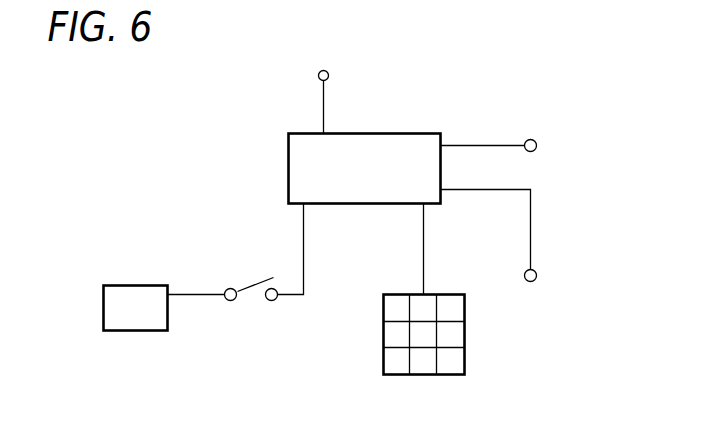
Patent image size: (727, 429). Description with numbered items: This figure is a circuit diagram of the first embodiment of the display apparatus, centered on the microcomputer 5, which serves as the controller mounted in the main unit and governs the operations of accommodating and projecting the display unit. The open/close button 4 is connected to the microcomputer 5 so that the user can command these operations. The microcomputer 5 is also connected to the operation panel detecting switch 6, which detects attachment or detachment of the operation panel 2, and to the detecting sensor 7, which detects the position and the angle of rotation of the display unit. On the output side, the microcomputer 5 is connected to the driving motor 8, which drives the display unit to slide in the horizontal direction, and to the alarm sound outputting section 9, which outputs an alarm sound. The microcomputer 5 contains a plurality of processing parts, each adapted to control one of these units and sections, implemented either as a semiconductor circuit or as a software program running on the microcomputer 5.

The operation panel 2 is at (137, 285).
The open/close button 4 is at (464, 333).
The microcomputer 5 is at (396, 130).
The operation panel detecting switch 6 is at (253, 284).
The detecting sensor 7 is at (536, 275).
The driving motor 8 is at (536, 145).
The alarm sound outputting section 9 is at (328, 70).